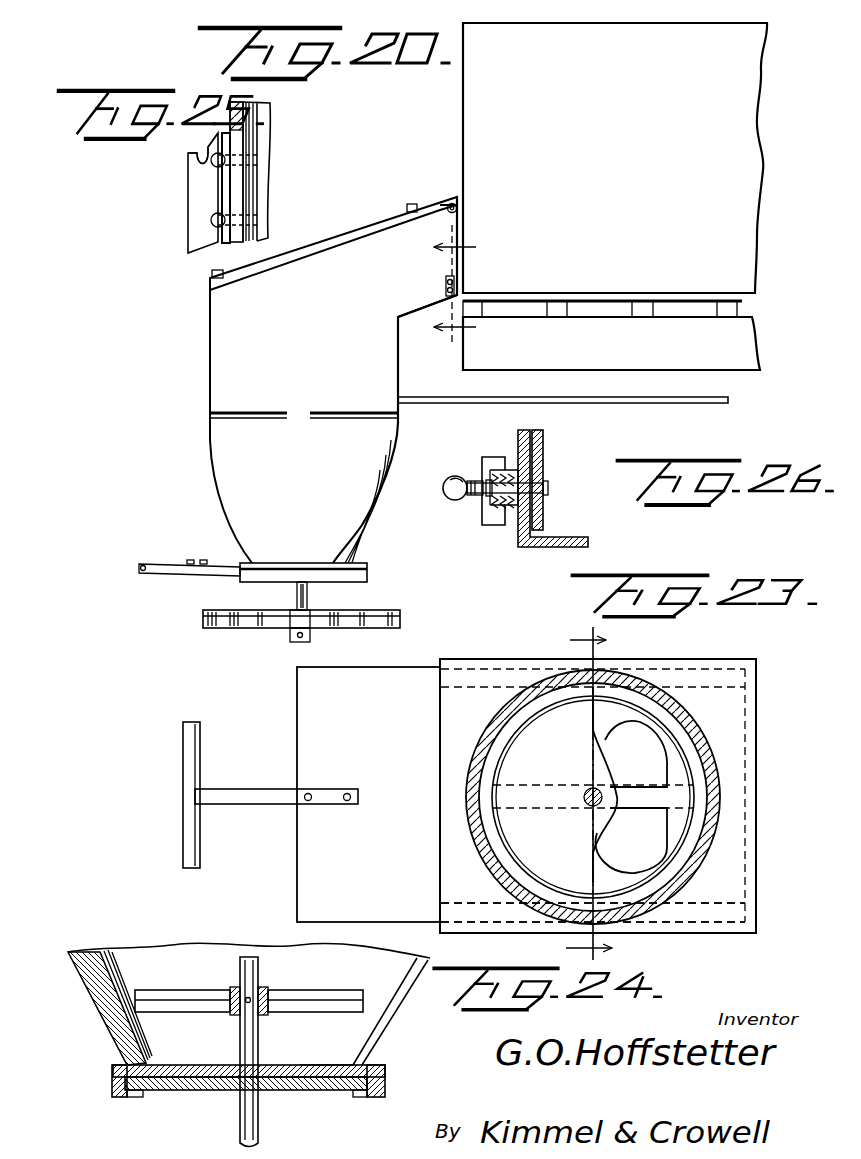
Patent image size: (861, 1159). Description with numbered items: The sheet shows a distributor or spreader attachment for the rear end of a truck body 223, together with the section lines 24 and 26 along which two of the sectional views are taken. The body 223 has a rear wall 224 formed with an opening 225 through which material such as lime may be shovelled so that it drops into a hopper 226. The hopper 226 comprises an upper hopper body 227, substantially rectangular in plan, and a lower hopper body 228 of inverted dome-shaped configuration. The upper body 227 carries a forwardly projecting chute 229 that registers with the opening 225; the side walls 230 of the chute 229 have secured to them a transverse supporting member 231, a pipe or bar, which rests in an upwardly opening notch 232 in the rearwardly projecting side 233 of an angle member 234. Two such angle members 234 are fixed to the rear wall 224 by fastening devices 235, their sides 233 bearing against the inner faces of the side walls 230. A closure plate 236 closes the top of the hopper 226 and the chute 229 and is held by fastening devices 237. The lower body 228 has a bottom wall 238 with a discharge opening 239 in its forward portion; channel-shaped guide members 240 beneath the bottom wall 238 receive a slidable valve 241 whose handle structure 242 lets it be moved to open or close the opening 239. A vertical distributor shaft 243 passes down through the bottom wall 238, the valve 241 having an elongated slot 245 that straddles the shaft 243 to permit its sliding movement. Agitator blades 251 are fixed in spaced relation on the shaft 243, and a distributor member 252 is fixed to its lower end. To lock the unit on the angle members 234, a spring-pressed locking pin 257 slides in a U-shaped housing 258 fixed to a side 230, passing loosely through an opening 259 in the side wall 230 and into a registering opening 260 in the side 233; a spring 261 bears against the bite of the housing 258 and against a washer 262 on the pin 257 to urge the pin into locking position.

In FIG. 23, the section line 24- 24 is at (569, 794).
In FIG. 20, the section line 26- 26 is at (468, 291).
In FIG. 20, the truck body 223 is at (472, 130).
In FIG. 25, the rear wall 224 is at (247, 117).
In FIG. 25, the opening 225 is at (237, 206).
In FIG. 20, the hopper 226 is at (236, 473).
In FIG. 20, the upper hopper body 227 is at (398, 336).
In FIG. 23, the lower hopper body 228 is at (462, 805).
In FIG. 24, the lower hopper body 228 is at (97, 1003).
In FIG. 20, the chute 229 is at (414, 320).
In FIG. 26, the side walls 230 is at (524, 441).
In FIG. 20, the supporting member 231 is at (458, 209).
In FIG. 25, the notch 232 is at (197, 153).
In FIG. 25, the rearwardly projecting side 233 is at (193, 208).
In FIG. 26, the rearwardly projecting side 233 is at (541, 447).
In FIG. 25, the angle member 234 is at (201, 237).
In FIG. 25, the fastening devices 235 is at (249, 158).
In FIG. 20, the closure plate 236 is at (329, 240).
In FIG. 20, the fastening devices 237 is at (413, 204).
In FIG. 23, the bottom wall 238 is at (450, 722).
In FIG. 24, the bottom wall 238 is at (187, 1048).
In FIG. 23, the discharge opening 239 is at (600, 826).
In FIG. 24, the discharge opening 239 is at (313, 1060).
In FIG. 20, the guide members 240 is at (355, 580).
In FIG. 23, the guide members 240 is at (706, 905).
In FIG. 24, the guide members 240 is at (133, 1097).
In FIG. 20, the valve 241 is at (200, 576).
In FIG. 23, the valve 241 is at (308, 852).
In FIG. 24, the valve 241 is at (210, 1090).
In FIG. 23, the handle structure 242 is at (229, 789).
In FIG. 20, the distributor shaft 243 is at (297, 592).
In FIG. 23, the distributor shaft 243 is at (591, 789).
In FIG. 24, the distributor shaft 243 is at (252, 1042).
In FIG. 23, the elongated slot 245 is at (636, 796).
In FIG. 24, the agitator blades 251 is at (268, 990).
In FIG. 20, the distributor member 252 is at (366, 632).
In FIG. 20, the locking pin 257 is at (446, 285).
In FIG. 26, the locking pin 257 is at (455, 476).
In FIG. 20, the U-shaped support or housing 258 is at (446, 292).
In FIG. 26, the U-shaped support or housing 258 is at (490, 457).
In FIG. 26, the opening 259 is at (528, 503).
In FIG. 26, the opening 260 is at (530, 470).
In FIG. 26, the spring 261 is at (489, 527).
In FIG. 26, the washer or pin 262 is at (512, 517).